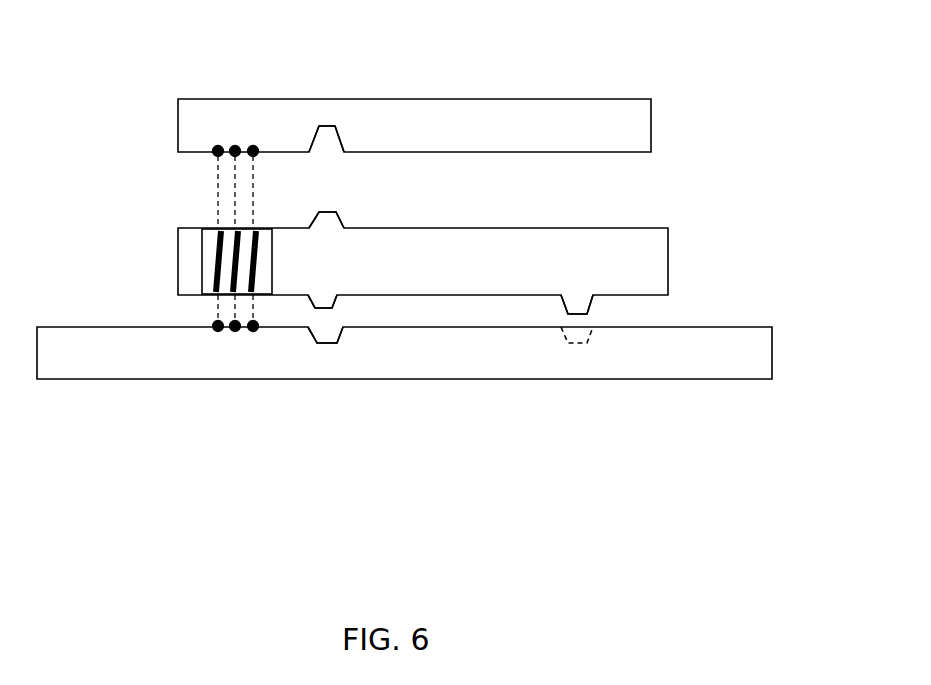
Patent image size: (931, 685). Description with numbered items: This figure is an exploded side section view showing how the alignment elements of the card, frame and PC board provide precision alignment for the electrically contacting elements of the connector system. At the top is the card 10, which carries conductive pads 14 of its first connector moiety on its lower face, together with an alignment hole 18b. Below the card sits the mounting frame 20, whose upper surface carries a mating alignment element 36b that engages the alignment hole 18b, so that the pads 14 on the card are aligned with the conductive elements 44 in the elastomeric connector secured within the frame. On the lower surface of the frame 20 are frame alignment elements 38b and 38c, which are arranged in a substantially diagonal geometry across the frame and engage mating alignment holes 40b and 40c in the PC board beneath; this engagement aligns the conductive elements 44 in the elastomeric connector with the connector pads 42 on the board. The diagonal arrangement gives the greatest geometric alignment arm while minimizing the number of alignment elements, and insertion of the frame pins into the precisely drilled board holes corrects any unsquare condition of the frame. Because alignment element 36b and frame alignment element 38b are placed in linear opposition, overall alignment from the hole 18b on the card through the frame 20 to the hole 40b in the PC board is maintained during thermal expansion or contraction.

The card 10 is at (475, 115).
The conductive pads 14 is at (215, 153).
The alignment hole 18b is at (325, 127).
The mounting frame 20 is at (637, 251).
The mating alignment element 36b is at (324, 212).
The frame alignment element 38b is at (334, 303).
The frame alignment element 38c is at (578, 308).
The alignment hole in PC board 40b is at (325, 345).
The alignment hole in PC board 40c is at (583, 343).
The connector pads 42 is at (215, 325).
The conductive elements 44 is at (217, 228).